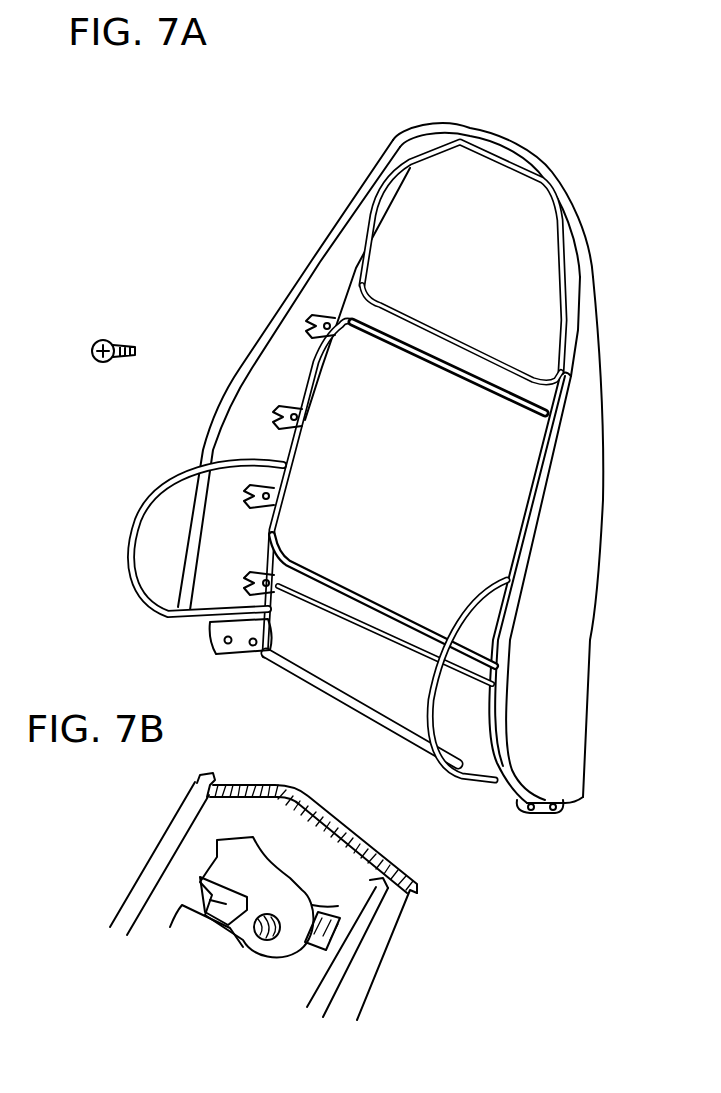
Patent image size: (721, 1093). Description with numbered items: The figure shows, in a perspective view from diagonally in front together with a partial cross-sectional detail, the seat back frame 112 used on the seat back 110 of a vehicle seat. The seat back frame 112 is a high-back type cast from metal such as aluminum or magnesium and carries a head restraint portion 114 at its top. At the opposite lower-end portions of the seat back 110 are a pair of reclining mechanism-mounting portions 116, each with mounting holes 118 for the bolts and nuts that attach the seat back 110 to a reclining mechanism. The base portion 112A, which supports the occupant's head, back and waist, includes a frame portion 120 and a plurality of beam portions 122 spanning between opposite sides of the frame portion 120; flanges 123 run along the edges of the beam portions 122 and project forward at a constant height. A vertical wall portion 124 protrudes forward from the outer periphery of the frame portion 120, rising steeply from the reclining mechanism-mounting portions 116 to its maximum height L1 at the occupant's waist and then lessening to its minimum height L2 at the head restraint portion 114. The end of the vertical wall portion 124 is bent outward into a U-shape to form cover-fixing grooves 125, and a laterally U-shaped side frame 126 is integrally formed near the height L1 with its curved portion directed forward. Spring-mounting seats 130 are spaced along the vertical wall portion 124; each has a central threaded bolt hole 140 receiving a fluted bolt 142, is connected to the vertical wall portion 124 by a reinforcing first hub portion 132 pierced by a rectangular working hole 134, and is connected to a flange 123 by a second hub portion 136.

In FIG. 7A, the seat back 110 is at (340, 138).
In FIG. 7A, the seat back frame 112 is at (262, 296).
In FIG. 7A, the base portion 112A is at (368, 312).
In FIG. 7A, the head restraint portion 114 is at (520, 142).
In FIG. 7A, the reclining mechanism-mounting portion 116 is at (242, 652).
In FIG. 7A, the mounting hole 118 is at (527, 812).
In FIG. 7A, the frame portion 120 is at (374, 204).
In FIG. 7A, the beam portion 122 is at (445, 358).
In FIG. 7A, the flange 123 is at (440, 325).
In FIG. 7B, the flange 123 is at (352, 983).
In FIG. 7A, the vertical wall portion 124 is at (568, 476).
In FIG. 7B, the vertical wall portion 124 is at (215, 822).
In FIG. 7A, the cover-fixing groove 125 is at (224, 410).
In FIG. 7B, the cover-fixing groove 125 is at (218, 788).
In FIG. 7A, the side frame 126 is at (138, 546).
In FIG. 7A, the spring-mounting seat 130 is at (292, 442).
In FIG. 7B, the spring-mounting seat 130 is at (263, 907).
In FIG. 7B, the first hub portion 132 is at (207, 923).
In FIG. 7B, the working hole 134 is at (215, 907).
In FIG. 7B, the second hub portion 136 is at (327, 907).
In FIG. 7B, the bolt hole 140 is at (257, 947).
In FIG. 7A, the fluted bolt 142 is at (103, 340).
In FIG. 7A, the maximum height of vertical wall portion L1 is at (580, 740).
In FIG. 7A, the minimum height of vertical wall portion L2 is at (477, 146).